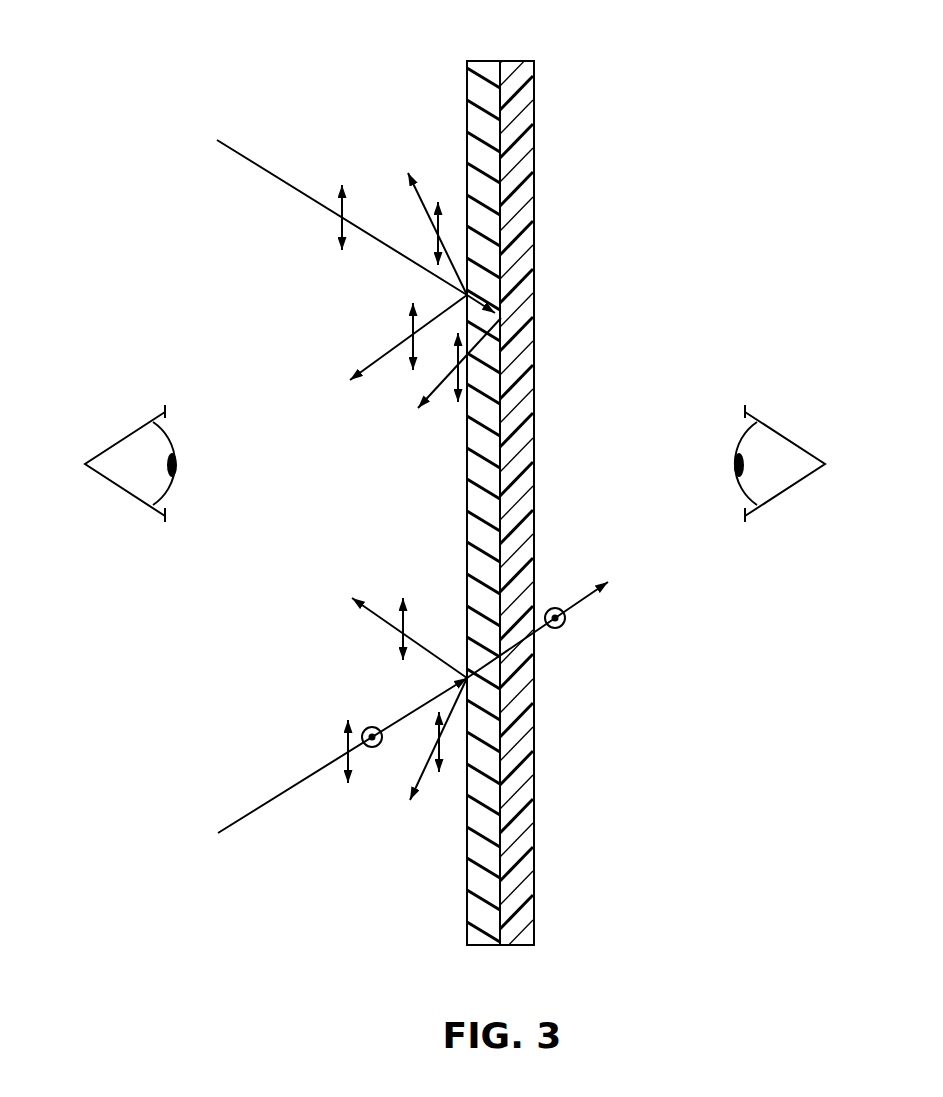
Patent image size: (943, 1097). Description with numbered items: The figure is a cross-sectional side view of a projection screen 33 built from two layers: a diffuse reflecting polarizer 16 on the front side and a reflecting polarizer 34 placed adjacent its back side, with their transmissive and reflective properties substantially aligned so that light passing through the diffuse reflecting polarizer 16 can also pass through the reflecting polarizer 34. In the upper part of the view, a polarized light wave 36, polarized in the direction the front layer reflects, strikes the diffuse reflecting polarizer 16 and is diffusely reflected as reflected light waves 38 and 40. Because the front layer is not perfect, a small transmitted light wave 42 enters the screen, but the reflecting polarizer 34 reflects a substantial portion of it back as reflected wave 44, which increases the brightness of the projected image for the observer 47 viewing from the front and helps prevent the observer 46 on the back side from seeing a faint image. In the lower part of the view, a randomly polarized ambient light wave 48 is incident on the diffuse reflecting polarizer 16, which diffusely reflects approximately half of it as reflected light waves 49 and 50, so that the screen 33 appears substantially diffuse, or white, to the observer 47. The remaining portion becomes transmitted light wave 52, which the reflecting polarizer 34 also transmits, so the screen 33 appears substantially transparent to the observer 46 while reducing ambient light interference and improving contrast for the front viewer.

The diffuse reflecting polarizer 16 is at (485, 942).
The projection screen 33 is at (534, 61).
The reflecting polarizer 34 is at (518, 942).
The incident polarized light wave 36 is at (298, 190).
The reflected light wave 38 is at (424, 204).
The reflected light wave 40 is at (385, 354).
The transmitted light wave 42 is at (472, 293).
The reflected wave 44 is at (450, 372).
The observer 46 is at (780, 445).
The observer 47 is at (135, 442).
The ambient light wave 48 is at (297, 785).
The reflected light wave 49 is at (437, 657).
The reflected light wave 50 is at (423, 778).
The transmitted light wave 52 is at (575, 606).